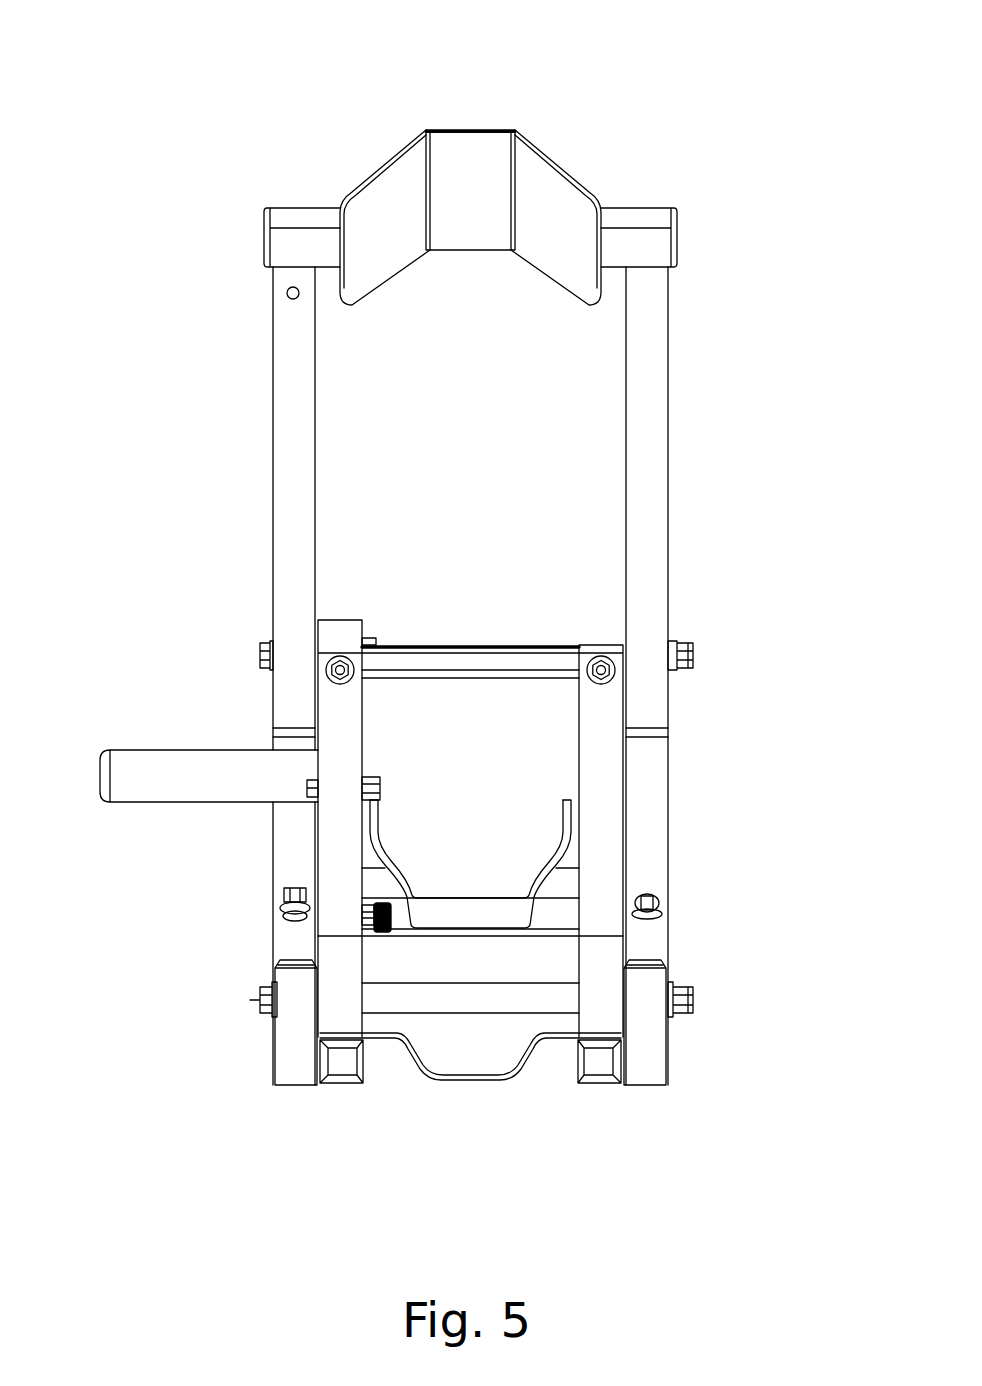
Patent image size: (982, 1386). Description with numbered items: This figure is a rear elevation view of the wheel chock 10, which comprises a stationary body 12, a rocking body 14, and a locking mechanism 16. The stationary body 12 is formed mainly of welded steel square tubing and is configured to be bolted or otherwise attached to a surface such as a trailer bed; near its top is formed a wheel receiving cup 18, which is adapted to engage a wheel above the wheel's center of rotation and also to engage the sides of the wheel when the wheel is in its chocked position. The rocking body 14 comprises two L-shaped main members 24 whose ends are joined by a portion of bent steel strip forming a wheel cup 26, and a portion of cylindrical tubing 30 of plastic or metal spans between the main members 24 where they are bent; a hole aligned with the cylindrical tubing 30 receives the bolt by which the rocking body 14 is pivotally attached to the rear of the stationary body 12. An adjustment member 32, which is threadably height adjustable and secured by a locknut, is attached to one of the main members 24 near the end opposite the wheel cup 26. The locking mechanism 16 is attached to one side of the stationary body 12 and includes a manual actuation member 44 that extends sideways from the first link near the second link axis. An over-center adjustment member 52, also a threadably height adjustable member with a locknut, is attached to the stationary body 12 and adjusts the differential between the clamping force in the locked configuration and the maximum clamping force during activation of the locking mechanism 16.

The wheel chock 10 is at (218, 142).
The stationary body 12 is at (647, 368).
The rocking body 14 is at (602, 762).
The locking mechanism 16 is at (189, 733).
The wheel receiving cup 18 is at (468, 190).
The L-shaped main members 24 is at (603, 827).
The wheel cup 26 is at (460, 1085).
The cylindrical tubing 30 is at (507, 998).
The adjustment member 32 is at (257, 998).
The manual actuation member 44 is at (153, 770).
The over-center adjustment member 52 is at (283, 882).